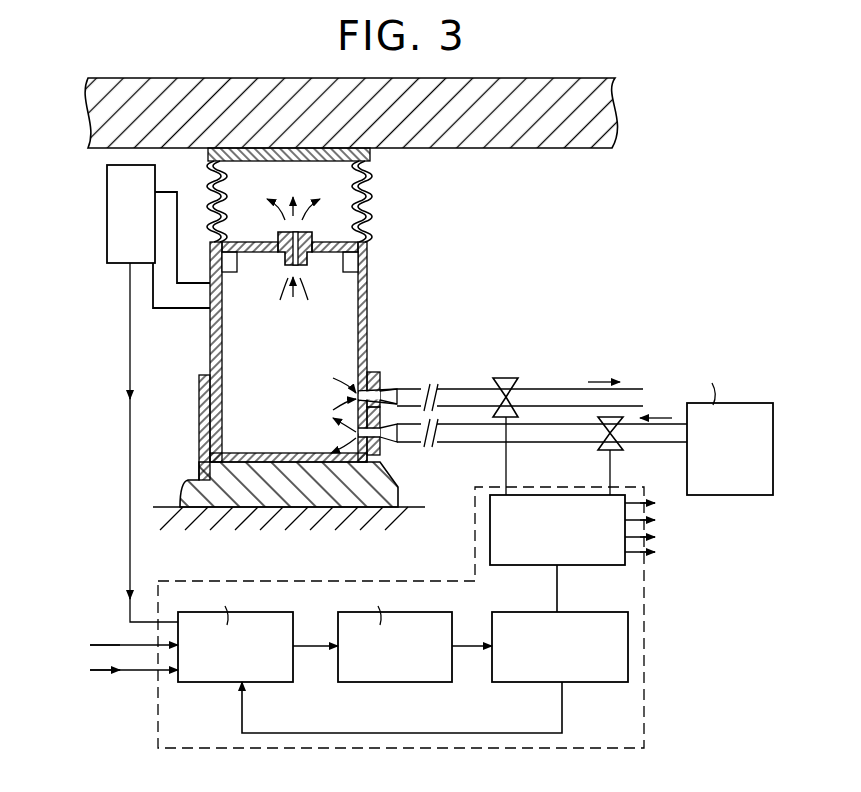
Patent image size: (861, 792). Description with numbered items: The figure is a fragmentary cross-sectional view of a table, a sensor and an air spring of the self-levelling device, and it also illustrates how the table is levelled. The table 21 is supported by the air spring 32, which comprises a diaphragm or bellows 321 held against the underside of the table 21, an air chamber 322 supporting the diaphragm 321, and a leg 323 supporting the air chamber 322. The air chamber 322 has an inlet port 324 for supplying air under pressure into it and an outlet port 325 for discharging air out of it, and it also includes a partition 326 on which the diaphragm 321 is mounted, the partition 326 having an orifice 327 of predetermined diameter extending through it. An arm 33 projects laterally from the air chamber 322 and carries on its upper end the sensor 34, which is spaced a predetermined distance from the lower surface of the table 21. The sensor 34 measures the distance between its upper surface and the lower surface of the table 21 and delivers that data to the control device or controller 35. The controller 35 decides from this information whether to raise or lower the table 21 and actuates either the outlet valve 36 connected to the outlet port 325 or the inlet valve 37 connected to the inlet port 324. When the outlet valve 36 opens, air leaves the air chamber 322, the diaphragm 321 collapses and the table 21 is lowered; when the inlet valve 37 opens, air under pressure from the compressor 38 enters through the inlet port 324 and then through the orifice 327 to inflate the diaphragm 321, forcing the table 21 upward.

The table 21 is at (250, 83).
The air spring 32 is at (382, 220).
The diaphragm or bellows 321 is at (343, 178).
The air chamber 322 is at (366, 285).
The leg 323 is at (205, 425).
The inlet port 324 is at (381, 440).
The outlet port 325 is at (380, 390).
The partition 326 is at (345, 255).
The orifice 327 is at (285, 265).
The arm 33 is at (165, 303).
The sensor 34 is at (112, 203).
The control device or controller 35 is at (640, 592).
The outlet valve 36 is at (506, 378).
The inlet valve 37 is at (622, 451).
The compressor 38 is at (773, 468).